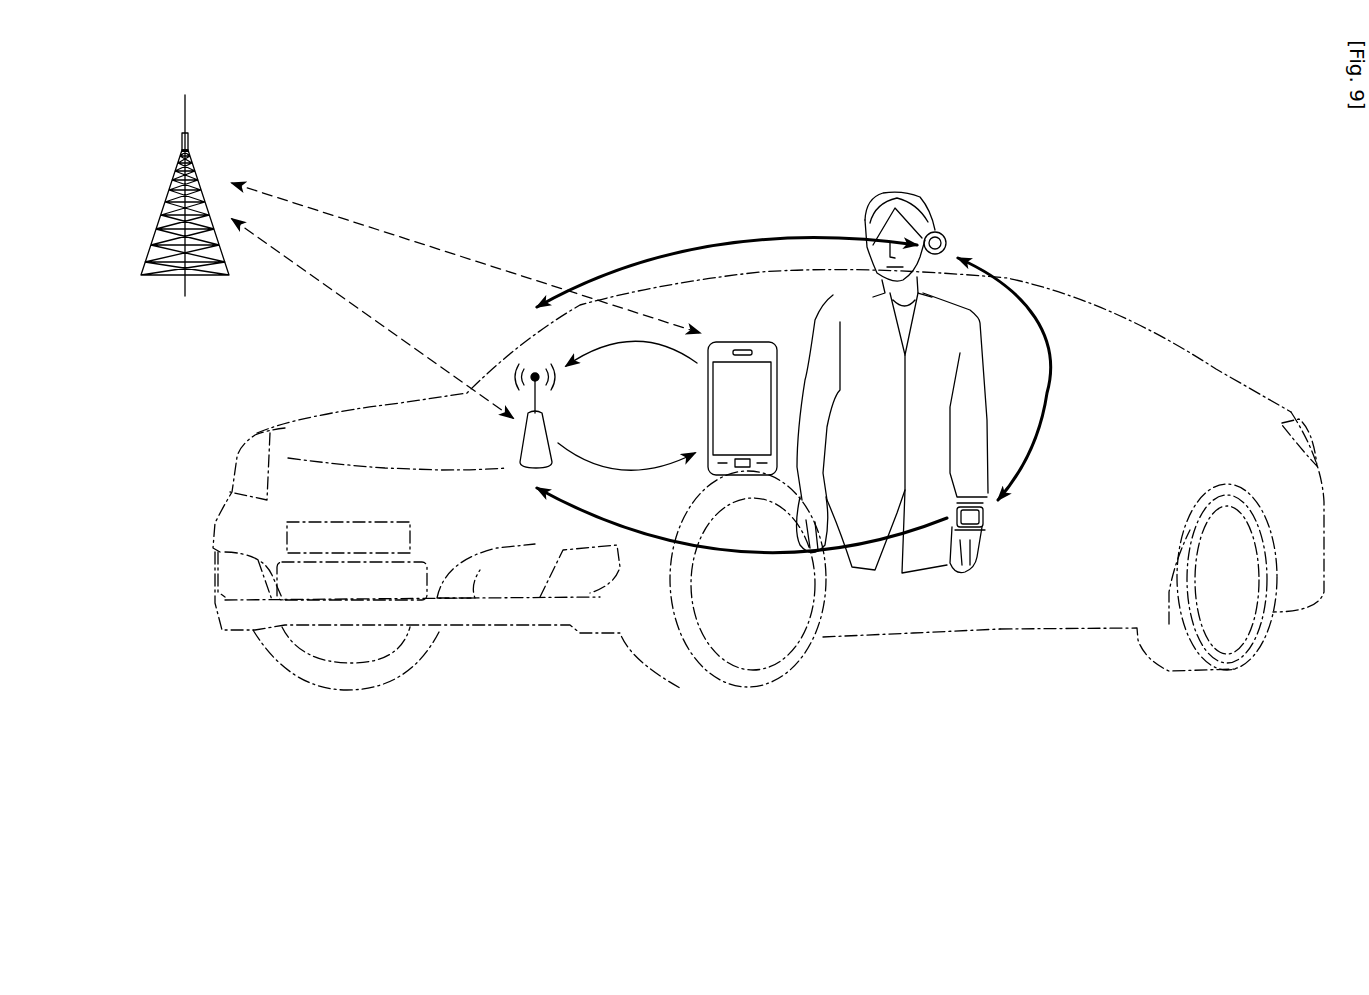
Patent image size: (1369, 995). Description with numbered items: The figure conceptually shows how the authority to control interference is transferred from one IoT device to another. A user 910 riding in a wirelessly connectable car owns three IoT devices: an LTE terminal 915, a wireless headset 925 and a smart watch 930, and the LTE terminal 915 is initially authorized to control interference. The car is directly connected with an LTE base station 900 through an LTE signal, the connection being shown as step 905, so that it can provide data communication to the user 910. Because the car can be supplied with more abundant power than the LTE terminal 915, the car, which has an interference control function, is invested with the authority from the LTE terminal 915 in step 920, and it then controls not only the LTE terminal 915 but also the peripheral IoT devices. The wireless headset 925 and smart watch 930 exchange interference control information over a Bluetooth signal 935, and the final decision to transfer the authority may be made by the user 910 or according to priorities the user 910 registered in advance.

The base station 900 is at (185, 108).
The connection with LTE base station 905 is at (396, 233).
The user 910 is at (853, 568).
The LTE terminal 915 is at (744, 342).
The transfer of interference control authority 920 is at (560, 353).
The wireless headset 925 is at (975, 243).
The smart watch 930 is at (985, 516).
The Bluetooth signal 935 is at (1050, 350).